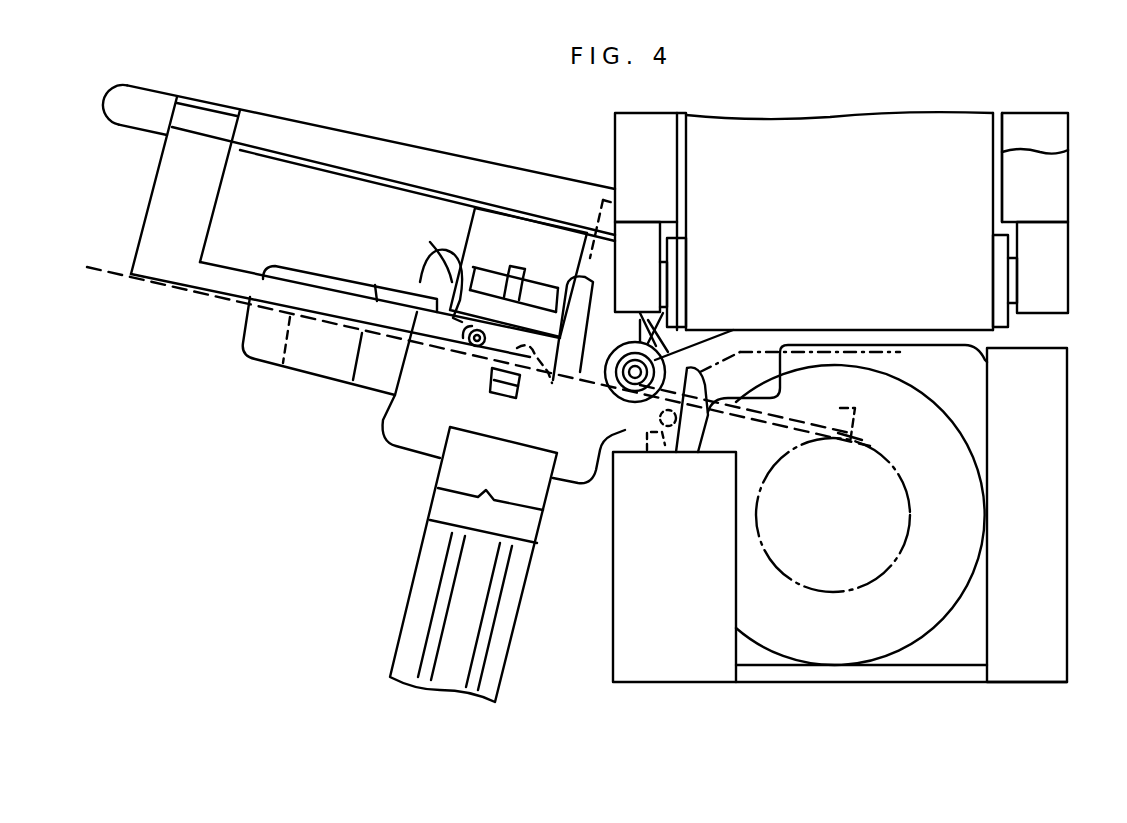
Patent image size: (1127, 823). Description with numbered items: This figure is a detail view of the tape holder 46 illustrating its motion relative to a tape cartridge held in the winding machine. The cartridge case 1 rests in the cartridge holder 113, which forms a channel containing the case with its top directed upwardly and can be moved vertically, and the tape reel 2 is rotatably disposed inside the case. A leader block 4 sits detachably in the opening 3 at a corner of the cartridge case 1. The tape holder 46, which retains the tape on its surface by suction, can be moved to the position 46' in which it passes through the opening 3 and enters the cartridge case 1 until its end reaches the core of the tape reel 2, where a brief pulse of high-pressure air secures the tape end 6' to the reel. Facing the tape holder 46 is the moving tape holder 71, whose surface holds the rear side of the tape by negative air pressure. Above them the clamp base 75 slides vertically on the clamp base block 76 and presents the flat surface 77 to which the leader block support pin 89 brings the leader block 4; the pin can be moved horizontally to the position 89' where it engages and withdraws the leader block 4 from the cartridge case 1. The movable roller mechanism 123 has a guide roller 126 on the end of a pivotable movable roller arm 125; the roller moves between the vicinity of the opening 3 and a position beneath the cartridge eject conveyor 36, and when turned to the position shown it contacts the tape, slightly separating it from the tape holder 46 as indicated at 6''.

The tape holder 46 is at (478, 265).
The flat surface 77 is at (445, 300).
The tape separated position 6'' is at (330, 353).
The moving tape holder 71 is at (501, 420).
The clamp base block 76 is at (507, 227).
The clamp base 75 is at (447, 280).
The leader block support pin 89 is at (468, 368).
The leader block 4 is at (520, 385).
The cartridge eject conveyor 36 is at (975, 153).
The movable roller arm 125 is at (690, 345).
The movable roller mechanism 123 is at (733, 330).
The guide roller 126 is at (627, 400).
The opening 3 is at (722, 382).
The cartridge case 1 is at (872, 350).
The cartridge holder 113 is at (670, 668).
The tape reel 2 is at (770, 653).
The tape holder position 46' is at (777, 414).
The tape end 6' is at (882, 456).
The leader block support pin position 89' is at (669, 456).